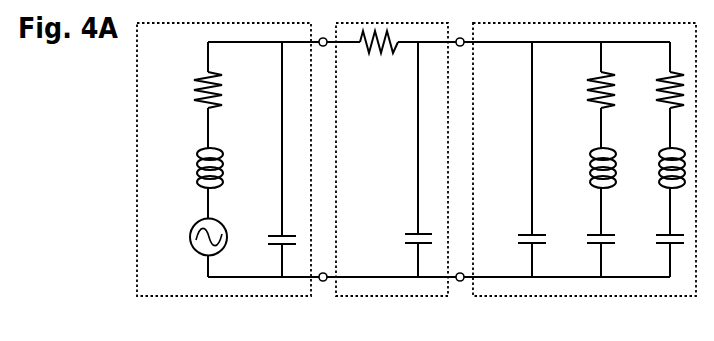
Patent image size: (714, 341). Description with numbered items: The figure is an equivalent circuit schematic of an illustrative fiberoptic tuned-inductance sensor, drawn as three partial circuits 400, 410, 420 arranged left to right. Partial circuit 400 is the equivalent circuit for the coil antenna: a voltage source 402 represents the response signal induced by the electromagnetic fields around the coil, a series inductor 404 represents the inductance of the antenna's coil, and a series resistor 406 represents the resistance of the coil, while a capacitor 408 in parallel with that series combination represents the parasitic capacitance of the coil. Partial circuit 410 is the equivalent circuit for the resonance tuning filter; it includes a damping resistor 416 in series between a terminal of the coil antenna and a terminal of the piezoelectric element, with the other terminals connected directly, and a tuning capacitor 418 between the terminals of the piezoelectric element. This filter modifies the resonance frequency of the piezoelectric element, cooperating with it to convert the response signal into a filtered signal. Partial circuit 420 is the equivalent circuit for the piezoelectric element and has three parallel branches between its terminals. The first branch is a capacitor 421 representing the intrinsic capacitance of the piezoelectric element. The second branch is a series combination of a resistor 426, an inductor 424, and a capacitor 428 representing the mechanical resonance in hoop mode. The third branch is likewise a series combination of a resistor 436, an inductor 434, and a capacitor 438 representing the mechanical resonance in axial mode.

The partial circuit 400 is at (177, 298).
The voltage source 402 is at (191, 244).
The series inductor 404 is at (198, 188).
The series resistor 406 is at (199, 93).
The capacitor 408 is at (270, 244).
The partial circuit 410 is at (376, 298).
The damping resistor 416 is at (384, 55).
The tuning capacitor 418 is at (410, 244).
The partial circuit 420 is at (514, 298).
The capacitor 421 is at (521, 244).
The inductor 424 is at (590, 188).
The resistor 426 is at (588, 94).
The capacitor 428 is at (590, 244).
The inductor 434 is at (659, 188).
The resistor 436 is at (657, 94).
The capacitor 438 is at (659, 244).